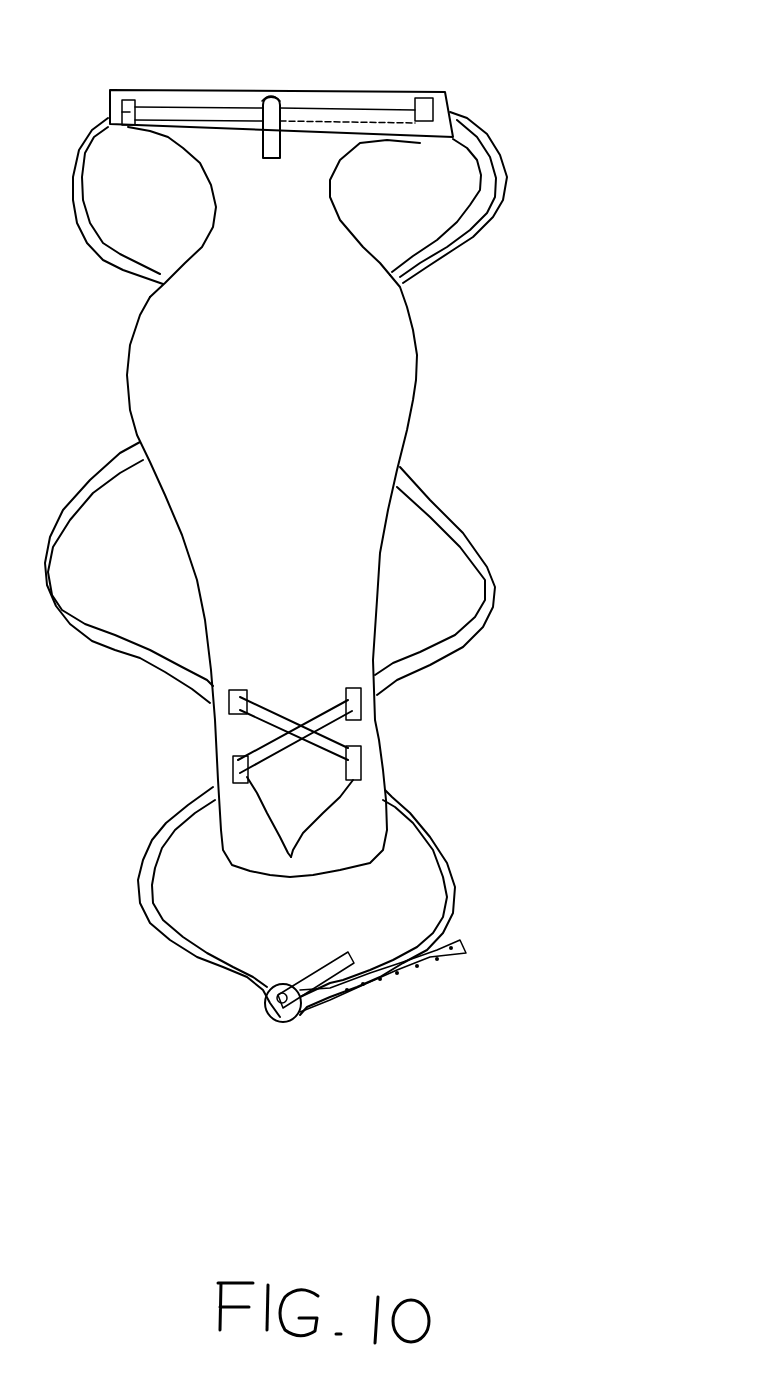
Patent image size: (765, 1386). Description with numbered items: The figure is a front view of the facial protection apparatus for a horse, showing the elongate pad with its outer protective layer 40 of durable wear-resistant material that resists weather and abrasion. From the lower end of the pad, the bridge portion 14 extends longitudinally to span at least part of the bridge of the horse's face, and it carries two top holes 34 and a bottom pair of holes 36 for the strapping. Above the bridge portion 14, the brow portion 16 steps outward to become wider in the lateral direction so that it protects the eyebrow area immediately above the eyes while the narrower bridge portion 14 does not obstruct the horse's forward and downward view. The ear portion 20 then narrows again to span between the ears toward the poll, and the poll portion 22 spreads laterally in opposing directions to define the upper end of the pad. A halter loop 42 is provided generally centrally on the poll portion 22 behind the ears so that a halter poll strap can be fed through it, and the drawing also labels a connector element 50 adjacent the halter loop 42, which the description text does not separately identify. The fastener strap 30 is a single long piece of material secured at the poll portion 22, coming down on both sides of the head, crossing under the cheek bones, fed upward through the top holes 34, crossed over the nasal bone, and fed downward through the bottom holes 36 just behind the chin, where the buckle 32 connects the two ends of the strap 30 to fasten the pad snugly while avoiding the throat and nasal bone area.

The bridge portion 14 is at (326, 882).
The brow portion 16 is at (322, 576).
The ear portion 20 is at (304, 212).
The poll portion 22 is at (281, 80).
The fastener strap 30 is at (331, 198).
The buckle 32 is at (365, 1023).
The top holes 34 is at (250, 686).
The bottom pair of holes 36 is at (300, 855).
The outer protective layer 40 is at (303, 572).
The halter loop 42 is at (314, 79).
The connector 50 is at (199, 149).